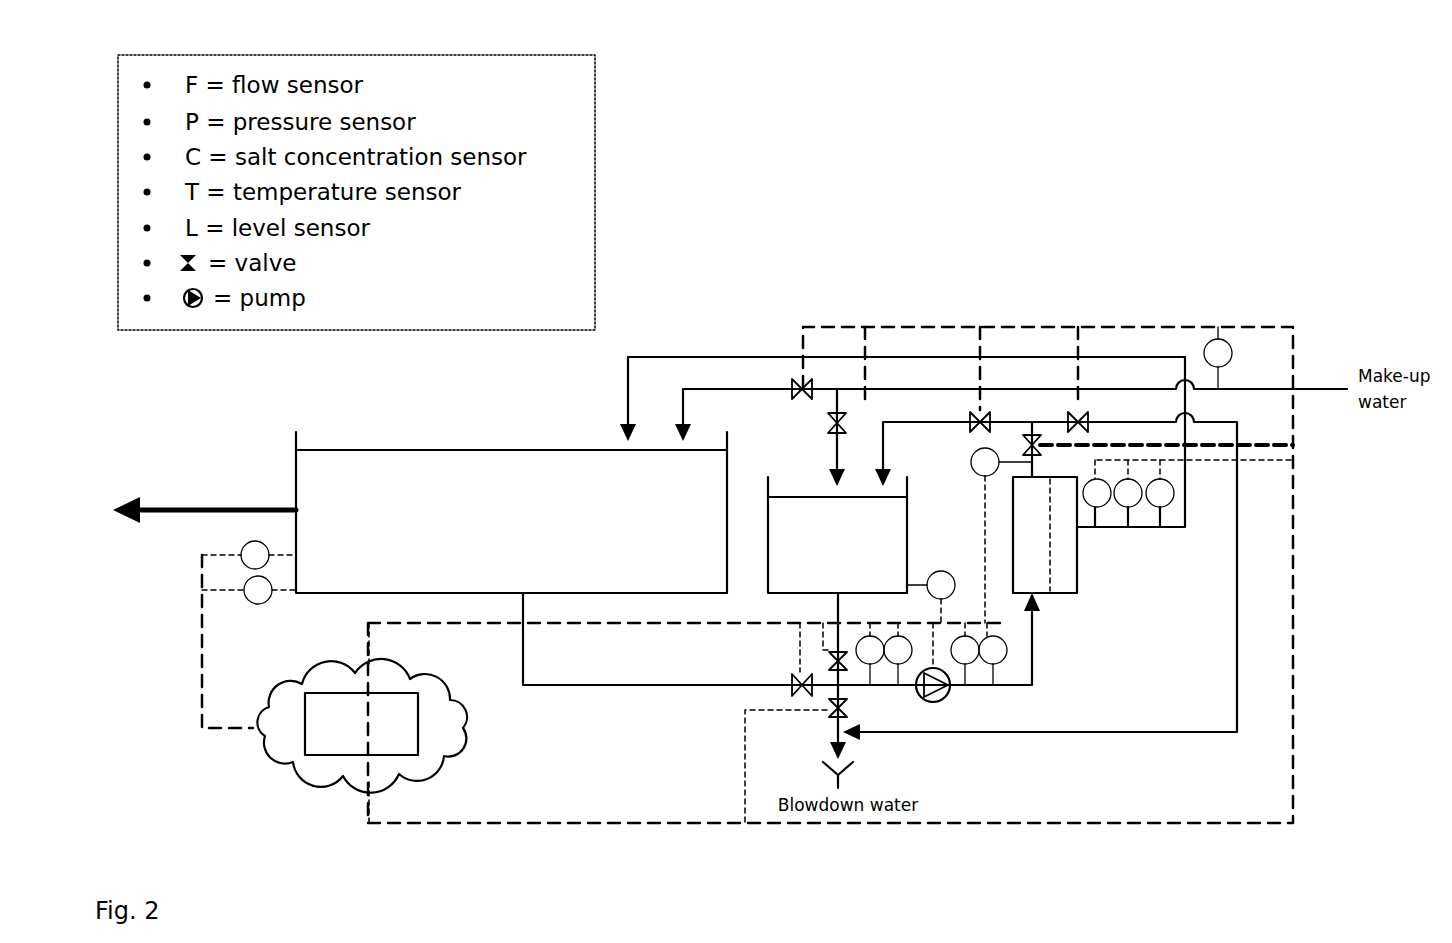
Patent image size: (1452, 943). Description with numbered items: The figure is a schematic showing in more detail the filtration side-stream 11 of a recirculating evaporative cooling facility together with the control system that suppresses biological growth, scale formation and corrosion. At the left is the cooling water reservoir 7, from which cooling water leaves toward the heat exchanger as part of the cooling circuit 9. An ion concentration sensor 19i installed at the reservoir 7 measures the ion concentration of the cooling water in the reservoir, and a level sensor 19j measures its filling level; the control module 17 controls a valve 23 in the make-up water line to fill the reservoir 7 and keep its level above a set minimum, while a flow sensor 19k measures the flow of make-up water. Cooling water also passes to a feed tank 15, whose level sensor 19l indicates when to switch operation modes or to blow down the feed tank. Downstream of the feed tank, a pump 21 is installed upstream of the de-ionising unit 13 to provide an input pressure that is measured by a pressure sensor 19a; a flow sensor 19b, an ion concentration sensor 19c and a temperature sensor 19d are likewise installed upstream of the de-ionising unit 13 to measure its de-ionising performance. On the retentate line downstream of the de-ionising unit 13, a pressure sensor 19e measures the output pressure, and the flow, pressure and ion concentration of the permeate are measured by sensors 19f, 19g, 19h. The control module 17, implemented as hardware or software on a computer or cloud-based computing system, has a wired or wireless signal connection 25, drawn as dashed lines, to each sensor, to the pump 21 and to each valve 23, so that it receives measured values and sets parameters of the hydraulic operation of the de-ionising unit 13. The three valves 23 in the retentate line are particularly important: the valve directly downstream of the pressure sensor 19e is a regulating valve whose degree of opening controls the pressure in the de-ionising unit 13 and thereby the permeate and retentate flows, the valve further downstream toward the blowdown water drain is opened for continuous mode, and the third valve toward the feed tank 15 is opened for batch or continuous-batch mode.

The cooling water reservoir 7 is at (396, 450).
The cooling circuit 9 is at (178, 515).
The filtration side-stream 11 is at (977, 222).
The de-ionising unit 13 is at (1057, 597).
The feed tank 15 is at (768, 523).
The control module 17 is at (320, 757).
The pressure sensor 19a is at (1008, 650).
The flow sensor 19b is at (968, 664).
The ion concentration sensor 19c is at (899, 665).
The temperature sensor 19d is at (874, 665).
The pressure sensor 19e is at (972, 470).
The flow sensor 19f is at (1107, 506).
The pressure sensor 19g is at (1138, 505).
The ion concentration sensor 19h is at (1172, 497).
The ion concentration sensor 19i is at (243, 560).
The level sensor 19j is at (250, 600).
The flow sensor 19k is at (1233, 348).
The level sensor 19l is at (940, 571).
The pump 21 is at (951, 690).
The valve 23 is at (1070, 416).
The signal connection 25 is at (197, 697).